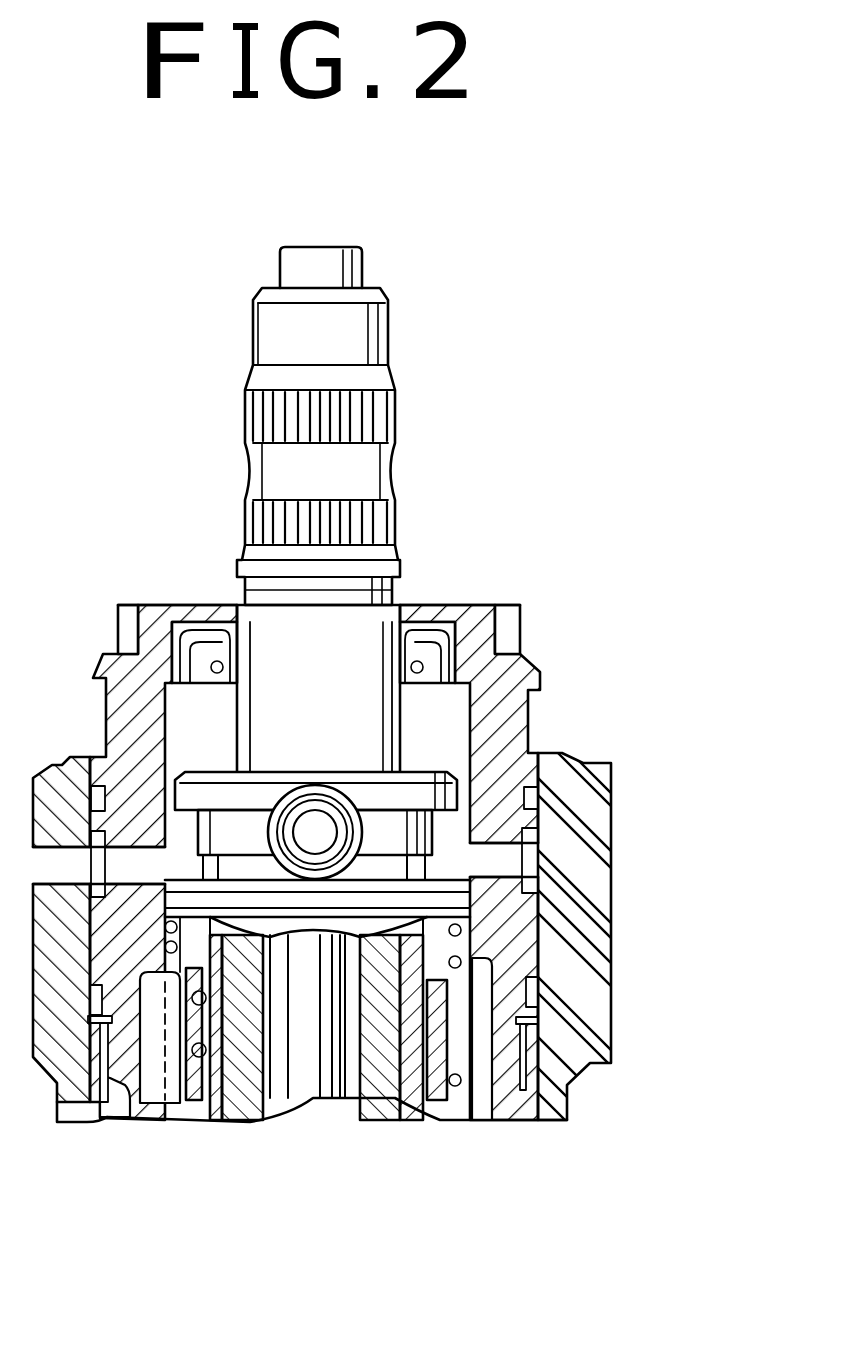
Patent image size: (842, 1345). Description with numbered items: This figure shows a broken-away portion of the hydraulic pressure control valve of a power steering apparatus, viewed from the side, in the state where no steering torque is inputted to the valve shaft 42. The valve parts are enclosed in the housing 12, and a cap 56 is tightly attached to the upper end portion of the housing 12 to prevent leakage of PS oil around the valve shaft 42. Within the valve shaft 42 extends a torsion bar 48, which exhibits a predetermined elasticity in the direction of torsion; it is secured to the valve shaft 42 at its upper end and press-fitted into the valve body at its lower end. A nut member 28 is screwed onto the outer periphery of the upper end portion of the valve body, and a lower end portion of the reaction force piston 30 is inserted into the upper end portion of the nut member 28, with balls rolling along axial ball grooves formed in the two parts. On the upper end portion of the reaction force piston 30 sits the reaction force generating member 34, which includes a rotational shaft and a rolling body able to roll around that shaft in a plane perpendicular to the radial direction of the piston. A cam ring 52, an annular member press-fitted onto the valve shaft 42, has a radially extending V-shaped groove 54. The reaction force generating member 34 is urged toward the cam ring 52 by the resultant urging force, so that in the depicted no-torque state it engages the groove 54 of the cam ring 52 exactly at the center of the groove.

The valve shaft 42 is at (365, 338).
The cap 56 is at (502, 677).
The groove 54 is at (312, 785).
The cam ring 52 is at (368, 792).
The reaction force generating member 34 is at (322, 830).
The housing 12 is at (578, 843).
The reaction force piston 30 is at (470, 897).
The torsion bar 48 is at (312, 1095).
The nut member 28 is at (462, 1106).